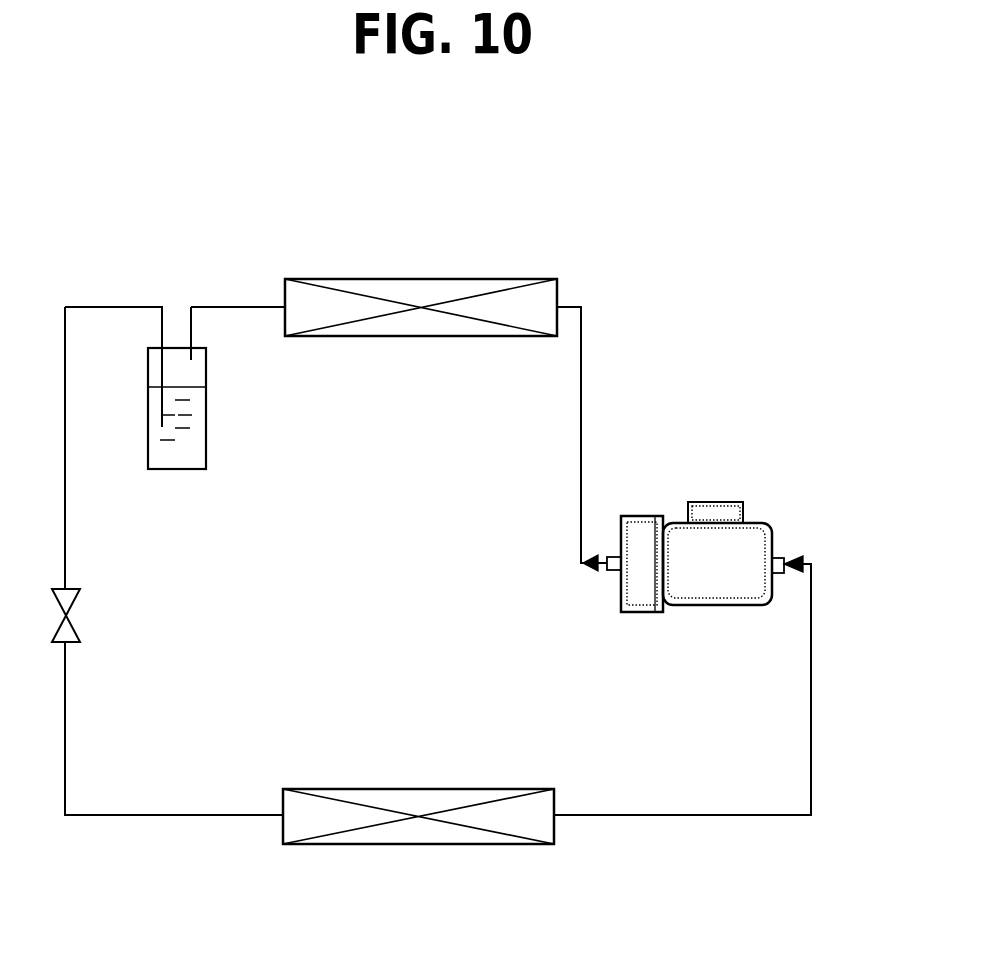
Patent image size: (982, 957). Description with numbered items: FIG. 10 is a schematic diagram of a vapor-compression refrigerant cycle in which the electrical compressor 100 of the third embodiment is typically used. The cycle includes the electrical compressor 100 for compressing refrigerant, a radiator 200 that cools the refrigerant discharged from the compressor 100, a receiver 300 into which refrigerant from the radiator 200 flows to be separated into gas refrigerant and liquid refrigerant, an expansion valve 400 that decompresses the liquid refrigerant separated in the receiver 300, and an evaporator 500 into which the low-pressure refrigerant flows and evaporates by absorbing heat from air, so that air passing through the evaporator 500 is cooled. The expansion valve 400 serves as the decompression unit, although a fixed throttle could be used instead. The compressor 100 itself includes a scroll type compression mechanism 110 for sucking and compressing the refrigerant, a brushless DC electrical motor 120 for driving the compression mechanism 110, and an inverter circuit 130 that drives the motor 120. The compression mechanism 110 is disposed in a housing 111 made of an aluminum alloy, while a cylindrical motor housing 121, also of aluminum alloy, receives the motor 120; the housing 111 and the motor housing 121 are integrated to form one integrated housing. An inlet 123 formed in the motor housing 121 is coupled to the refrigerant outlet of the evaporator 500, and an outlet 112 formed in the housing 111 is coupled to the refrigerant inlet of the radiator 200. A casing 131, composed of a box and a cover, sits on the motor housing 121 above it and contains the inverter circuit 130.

The electrical compressor 100 is at (705, 553).
The compression mechanism 110 is at (645, 598).
The housing 111 is at (622, 600).
The outlet 112 is at (620, 572).
The electrical motor 120 is at (776, 607).
The motor housing 121 is at (775, 527).
The inlet 123 is at (785, 556).
The inverter circuit 130 is at (769, 475).
The casing 131 is at (742, 507).
The radiator 200 is at (475, 290).
The receiver 300 is at (206, 417).
The expansion valve 400 is at (70, 598).
The evaporator 500 is at (488, 838).